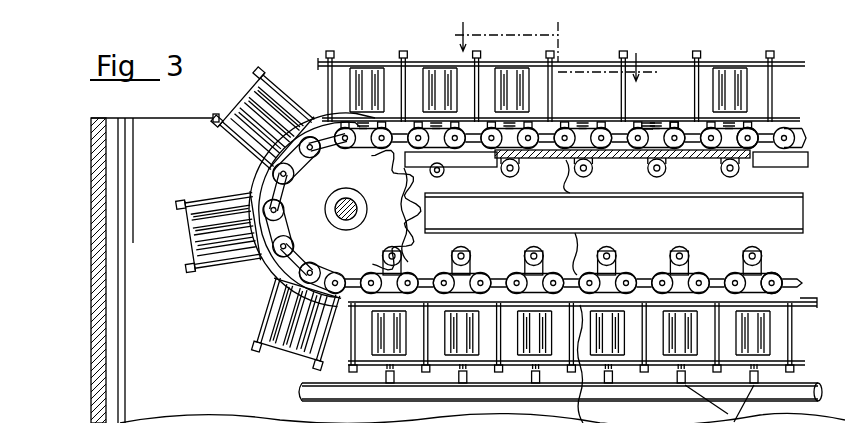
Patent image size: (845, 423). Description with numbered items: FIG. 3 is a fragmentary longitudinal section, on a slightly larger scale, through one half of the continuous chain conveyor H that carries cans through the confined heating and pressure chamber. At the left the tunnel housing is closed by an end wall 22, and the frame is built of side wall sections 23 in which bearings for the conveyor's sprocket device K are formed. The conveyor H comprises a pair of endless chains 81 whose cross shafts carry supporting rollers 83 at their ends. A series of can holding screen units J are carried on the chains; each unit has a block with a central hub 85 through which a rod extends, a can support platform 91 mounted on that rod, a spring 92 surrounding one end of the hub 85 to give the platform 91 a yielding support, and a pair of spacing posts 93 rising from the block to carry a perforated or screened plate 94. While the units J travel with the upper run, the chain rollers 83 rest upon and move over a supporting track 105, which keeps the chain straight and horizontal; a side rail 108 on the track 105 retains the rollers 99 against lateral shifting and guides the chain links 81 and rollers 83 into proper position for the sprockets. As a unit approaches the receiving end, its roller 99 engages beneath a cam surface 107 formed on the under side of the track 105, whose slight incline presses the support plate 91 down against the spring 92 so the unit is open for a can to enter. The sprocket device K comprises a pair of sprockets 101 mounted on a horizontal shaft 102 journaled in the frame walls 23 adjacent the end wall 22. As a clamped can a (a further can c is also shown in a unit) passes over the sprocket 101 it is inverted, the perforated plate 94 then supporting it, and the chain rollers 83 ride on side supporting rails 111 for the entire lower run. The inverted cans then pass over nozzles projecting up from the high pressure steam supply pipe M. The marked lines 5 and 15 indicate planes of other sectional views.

The end wall 22 is at (96, 188).
The side wall sections 23 is at (170, 135).
The section line 5 is at (501, 42).
The section line 15 is at (609, 75).
The can a is at (510, 72).
The article c is at (732, 80).
The perforated plate 94 is at (656, 62).
The spacing posts 93 is at (698, 75).
The spring 92 is at (650, 123).
The can support platform 91 is at (678, 122).
The supporting rollers 83 is at (793, 132).
The endless chains 81 is at (810, 145).
The sprockets 101 is at (376, 210).
The horizontal shaft 102 is at (352, 213).
The sprocket device K is at (300, 217).
The side rail 108 is at (472, 167).
The supporting track 105 is at (617, 160).
The roller 99 is at (660, 175).
The cam surface 107 is at (697, 160).
The can holding screen unit J is at (198, 257).
The side supporting rails 111 is at (270, 266).
The chain conveyor H is at (300, 282).
The central hub 85 is at (612, 273).
The high pressure steam supply pipe M is at (306, 400).